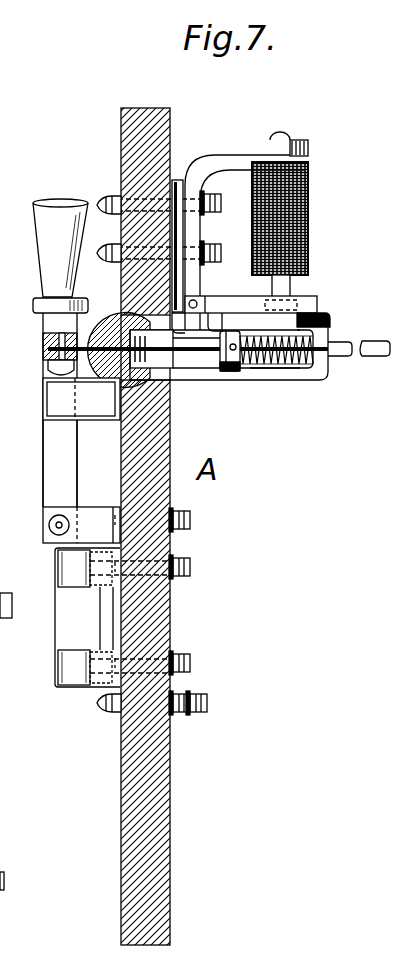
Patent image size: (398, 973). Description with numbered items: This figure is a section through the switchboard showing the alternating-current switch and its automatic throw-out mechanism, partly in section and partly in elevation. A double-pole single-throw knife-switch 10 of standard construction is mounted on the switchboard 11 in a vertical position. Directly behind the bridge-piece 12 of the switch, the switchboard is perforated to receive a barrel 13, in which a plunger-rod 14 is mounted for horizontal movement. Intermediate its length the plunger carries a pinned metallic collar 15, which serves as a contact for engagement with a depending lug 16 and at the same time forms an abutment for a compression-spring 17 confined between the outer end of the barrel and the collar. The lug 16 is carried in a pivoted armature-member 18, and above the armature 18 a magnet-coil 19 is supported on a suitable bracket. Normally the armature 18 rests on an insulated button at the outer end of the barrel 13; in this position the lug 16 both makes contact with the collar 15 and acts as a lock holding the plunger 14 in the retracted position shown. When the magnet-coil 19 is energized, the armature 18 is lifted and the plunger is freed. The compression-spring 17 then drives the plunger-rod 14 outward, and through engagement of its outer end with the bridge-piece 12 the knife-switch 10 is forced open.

The knife-switch 10 is at (89, 516).
The switchboard 11 is at (165, 616).
The bridge-piece 12 is at (43, 350).
The barrel 13 is at (188, 376).
The plunger-rod 14 is at (200, 350).
The metallic collar 15 is at (234, 360).
The depending lug 16 is at (226, 321).
The compression-spring 17 is at (308, 362).
The armature-member 18 is at (316, 300).
The magnet-coil 19 is at (300, 210).